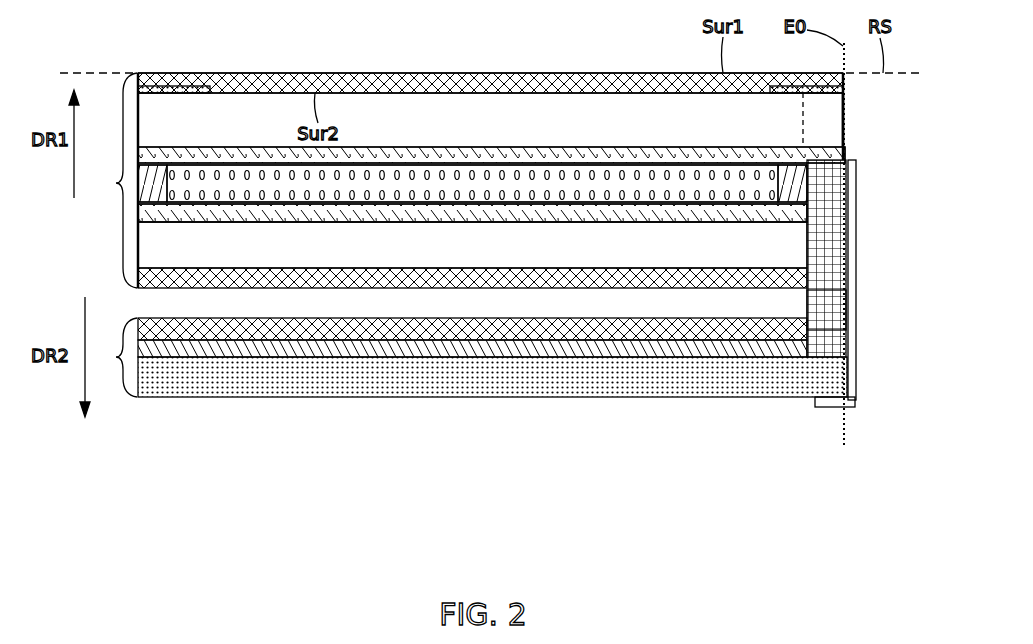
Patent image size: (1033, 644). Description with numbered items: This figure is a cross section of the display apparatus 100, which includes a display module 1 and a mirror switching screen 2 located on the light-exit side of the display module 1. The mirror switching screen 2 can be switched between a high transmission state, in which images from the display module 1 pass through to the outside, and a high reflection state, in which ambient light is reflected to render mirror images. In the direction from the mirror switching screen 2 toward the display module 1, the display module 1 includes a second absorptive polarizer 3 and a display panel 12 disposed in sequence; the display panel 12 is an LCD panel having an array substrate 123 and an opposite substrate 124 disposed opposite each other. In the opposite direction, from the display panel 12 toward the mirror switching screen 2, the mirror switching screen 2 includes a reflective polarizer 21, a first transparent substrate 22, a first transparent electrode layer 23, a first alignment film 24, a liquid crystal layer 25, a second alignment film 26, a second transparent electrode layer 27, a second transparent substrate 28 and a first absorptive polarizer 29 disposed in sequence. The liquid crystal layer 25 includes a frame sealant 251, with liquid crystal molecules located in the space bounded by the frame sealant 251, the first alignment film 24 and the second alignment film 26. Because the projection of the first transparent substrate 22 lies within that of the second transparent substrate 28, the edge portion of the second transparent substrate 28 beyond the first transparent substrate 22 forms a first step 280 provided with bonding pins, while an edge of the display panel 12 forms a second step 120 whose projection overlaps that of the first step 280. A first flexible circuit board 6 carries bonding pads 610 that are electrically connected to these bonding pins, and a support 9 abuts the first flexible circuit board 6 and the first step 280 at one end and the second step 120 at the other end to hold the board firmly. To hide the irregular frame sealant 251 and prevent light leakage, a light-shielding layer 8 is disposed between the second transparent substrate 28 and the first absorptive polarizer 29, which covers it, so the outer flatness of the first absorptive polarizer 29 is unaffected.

The display apparatus 100 is at (86, 43).
The light-shielding layer 8 is at (188, 84).
The liquid crystal layer 25 is at (436, 137).
The first absorptive polarizer 29 is at (313, 73).
The second alignment film 26 is at (390, 160).
The second transparent substrate 28 is at (455, 120).
The second transparent electrode layer 27 is at (515, 158).
The first alignment film 24 is at (575, 208).
The first transparent electrode layer 23 is at (618, 216).
The mirror switching screen 2 is at (114, 180).
The frame sealant 251 is at (137, 192).
The display module 1 is at (469, 412).
The array substrate 123 is at (283, 455).
The opposite substrate 124 is at (325, 357).
The display panel 12 is at (492, 423).
The second absorptive polarizer 3 is at (512, 325).
The first step 280 is at (848, 118).
The bonding pads 610 is at (852, 162).
The first flexible circuit board 6 is at (856, 212).
The first transparent substrate 22 is at (762, 245).
The reflective polarizer 21 is at (765, 280).
The support 9 is at (818, 310).
The second step 120 is at (860, 400).